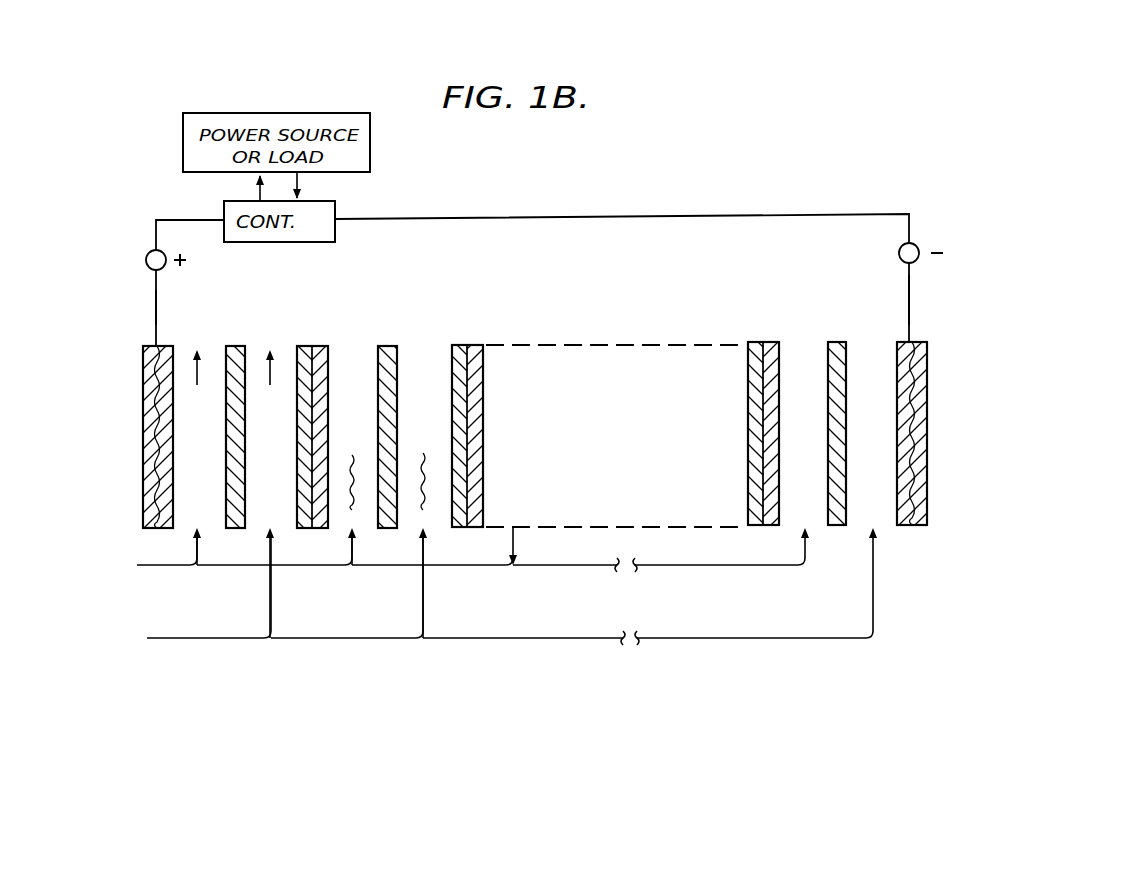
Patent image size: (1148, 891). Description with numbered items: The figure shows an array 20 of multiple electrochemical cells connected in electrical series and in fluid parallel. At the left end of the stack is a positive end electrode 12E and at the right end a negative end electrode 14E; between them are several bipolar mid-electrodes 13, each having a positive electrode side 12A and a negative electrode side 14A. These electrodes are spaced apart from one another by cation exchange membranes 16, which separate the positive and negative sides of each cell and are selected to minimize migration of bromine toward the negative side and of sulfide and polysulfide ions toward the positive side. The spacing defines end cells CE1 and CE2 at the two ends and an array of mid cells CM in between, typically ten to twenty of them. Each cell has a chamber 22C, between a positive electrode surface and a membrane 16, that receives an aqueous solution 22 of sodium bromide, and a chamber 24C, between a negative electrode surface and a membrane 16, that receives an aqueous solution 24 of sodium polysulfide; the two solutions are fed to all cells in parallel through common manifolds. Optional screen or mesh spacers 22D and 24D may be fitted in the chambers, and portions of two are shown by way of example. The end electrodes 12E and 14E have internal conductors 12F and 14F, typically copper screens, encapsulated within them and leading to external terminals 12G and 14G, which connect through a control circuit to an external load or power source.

The external terminal 12G is at (146, 261).
The internal conductor 12F is at (156, 308).
The positive end electrode 12E is at (143, 370).
The external terminal 14G is at (899, 255).
The internal conductor 14F is at (908, 287).
The negative end electrode 14E is at (902, 342).
The cation exchange membrane 16 is at (238, 346).
The mid-electrode 13 is at (531, 397).
The negative electrode side 14A is at (294, 352).
The positive electrode side 12A is at (305, 336).
The array 20 is at (508, 285).
The end cell CE1 is at (195, 409).
The end cell CE2 is at (788, 455).
The mid cell CM is at (443, 395).
The chamber 22C is at (279, 457).
The chamber 24C is at (348, 494).
The screen or mesh spacer 22D is at (349, 486).
The screen or mesh spacer 24D is at (424, 479).
The aqueous solution of NaBr 22 is at (451, 562).
The aqueous solution of Na2Sx 24 is at (487, 604).